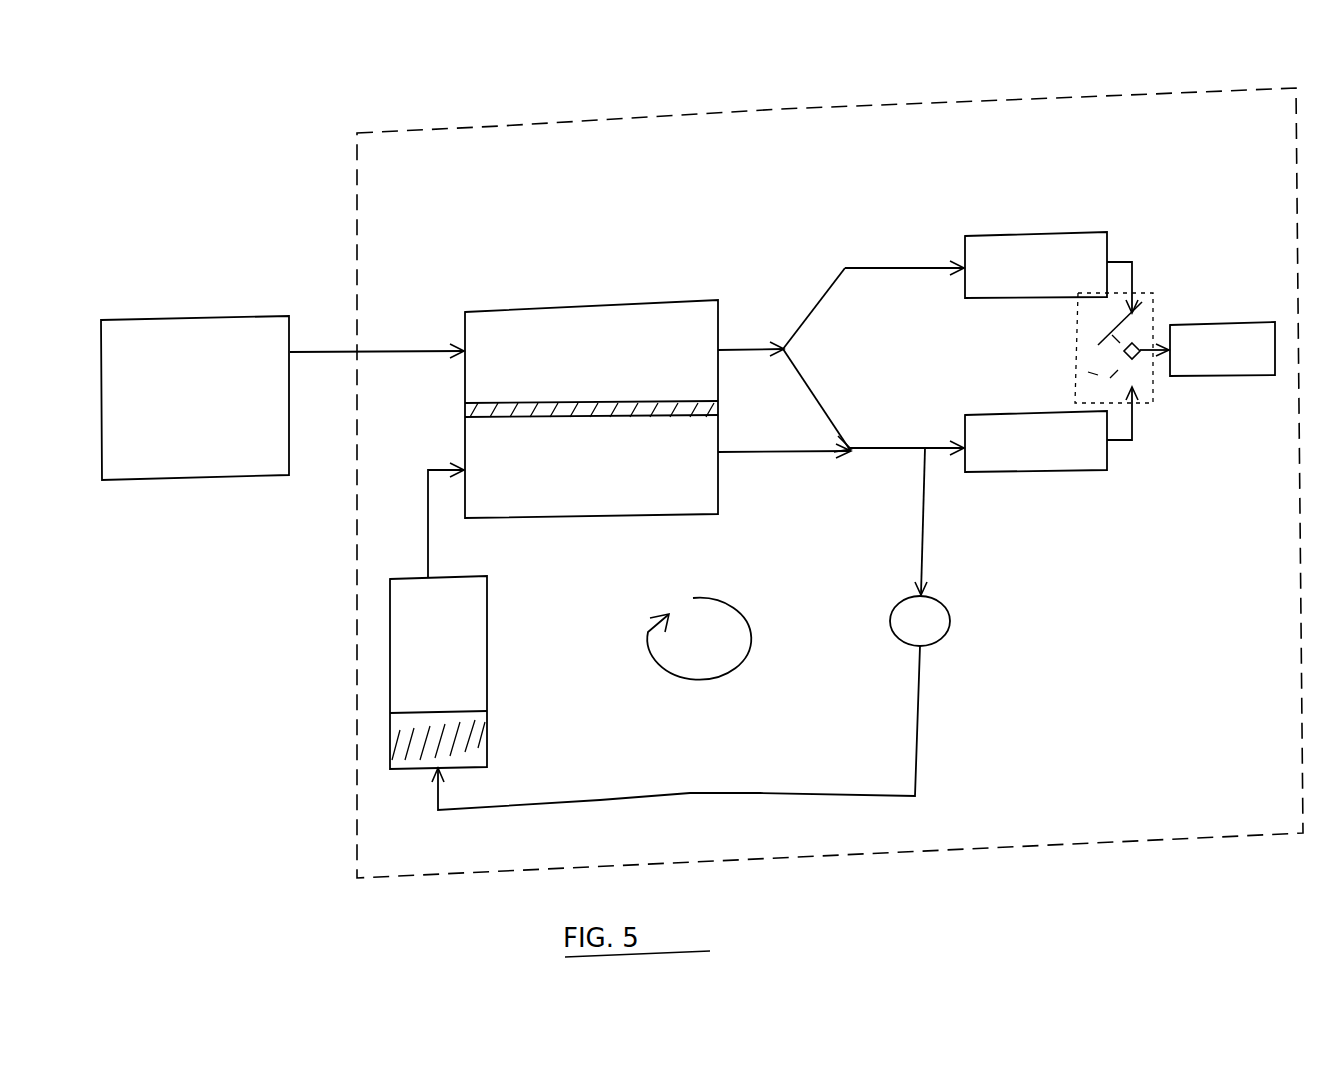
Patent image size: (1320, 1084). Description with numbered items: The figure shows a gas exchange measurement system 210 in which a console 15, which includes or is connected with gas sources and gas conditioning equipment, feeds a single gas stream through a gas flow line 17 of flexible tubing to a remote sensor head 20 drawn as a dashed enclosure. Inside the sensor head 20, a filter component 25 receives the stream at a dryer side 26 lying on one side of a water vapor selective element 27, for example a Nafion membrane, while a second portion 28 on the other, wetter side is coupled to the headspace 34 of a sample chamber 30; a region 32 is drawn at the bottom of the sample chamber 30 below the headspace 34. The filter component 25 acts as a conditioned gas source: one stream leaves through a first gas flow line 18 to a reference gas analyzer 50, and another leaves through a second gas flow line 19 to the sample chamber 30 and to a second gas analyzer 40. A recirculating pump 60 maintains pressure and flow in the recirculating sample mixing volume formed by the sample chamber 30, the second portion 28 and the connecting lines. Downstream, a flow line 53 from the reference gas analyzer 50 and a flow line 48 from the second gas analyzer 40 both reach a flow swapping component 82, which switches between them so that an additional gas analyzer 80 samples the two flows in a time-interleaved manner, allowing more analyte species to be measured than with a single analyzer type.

The gas exchange measurement system 210 is at (255, 125).
The sensor head 20 is at (570, 120).
The console 15 is at (195, 398).
The gas flow line 17 is at (405, 345).
The first gas flow line 18 is at (875, 264).
The second gas flow line 19 is at (890, 445).
The filter component 25 is at (590, 300).
The dryer side 26 is at (698, 396).
The water vapor selective element 27 is at (465, 409).
The second portion 28 is at (698, 501).
The sample chamber 30 is at (487, 677).
The water 32 is at (487, 742).
The headspace 34 is at (472, 617).
The second gas analyzer 40 is at (1036, 441).
The flow line 48 is at (1135, 432).
The reference gas analyzer 50 is at (1036, 265).
The upper valve inlet line 53 is at (1140, 262).
The recirculating pump 60 is at (945, 640).
The gas analyzer 80 is at (1262, 371).
The flow swapping component 82 is at (1075, 343).